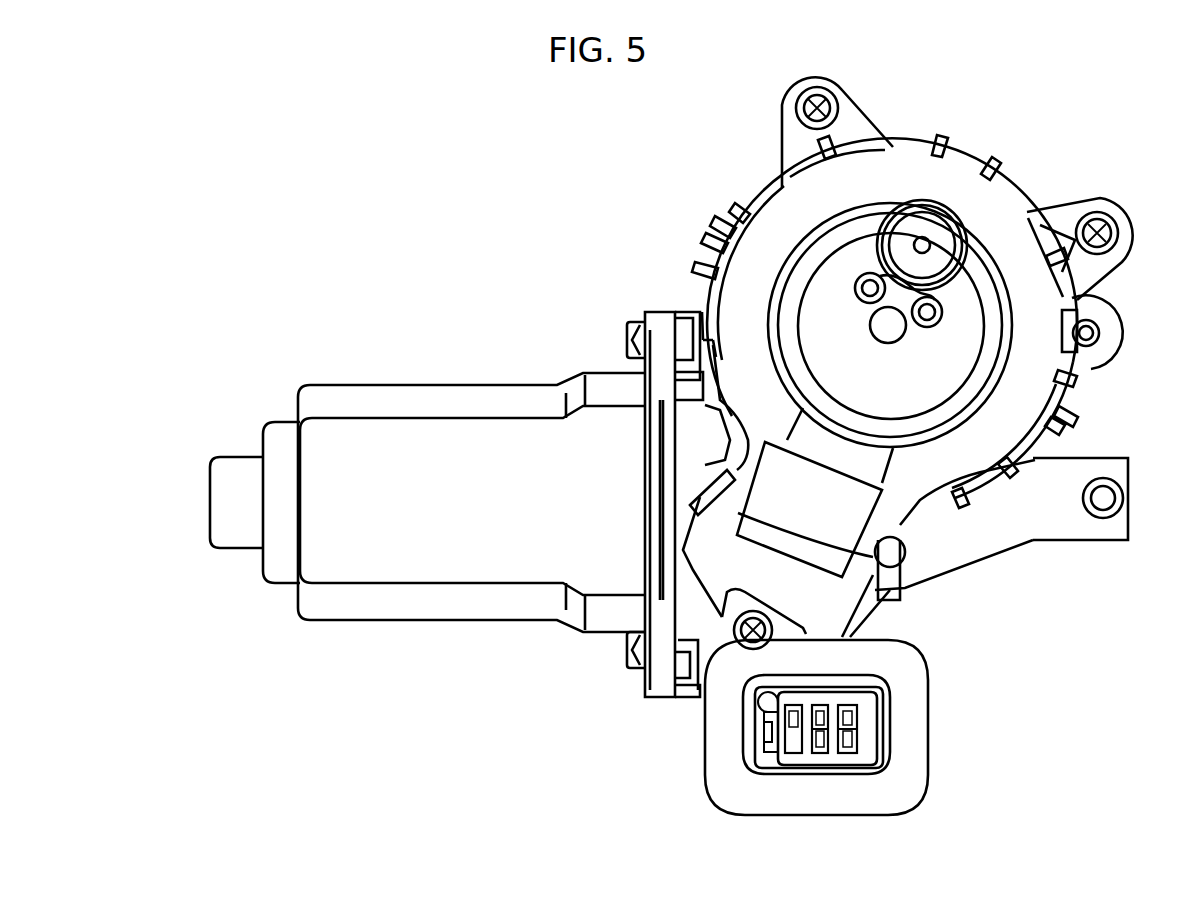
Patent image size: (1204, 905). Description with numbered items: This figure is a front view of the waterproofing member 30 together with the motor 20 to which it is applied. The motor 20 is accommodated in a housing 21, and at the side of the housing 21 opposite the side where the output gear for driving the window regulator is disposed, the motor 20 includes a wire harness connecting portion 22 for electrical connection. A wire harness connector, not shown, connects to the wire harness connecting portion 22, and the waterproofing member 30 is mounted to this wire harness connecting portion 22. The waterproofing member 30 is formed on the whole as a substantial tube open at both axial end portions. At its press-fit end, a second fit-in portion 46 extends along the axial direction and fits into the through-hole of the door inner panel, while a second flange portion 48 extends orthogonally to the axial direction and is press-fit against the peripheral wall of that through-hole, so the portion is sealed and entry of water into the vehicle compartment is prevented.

The motor 20 is at (598, 288).
The housing 21 is at (1108, 316).
The waterproofing member 30 is at (930, 668).
The second fit-in portion 46 is at (888, 723).
The second flange portion 48 is at (915, 778).
The wire harness connecting portion 22 is at (825, 758).